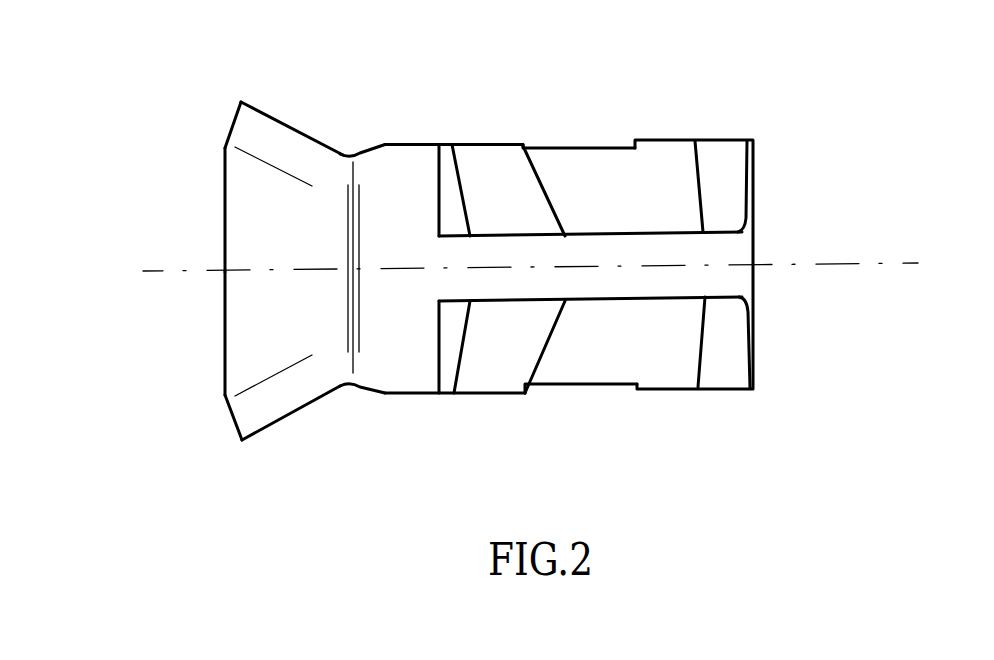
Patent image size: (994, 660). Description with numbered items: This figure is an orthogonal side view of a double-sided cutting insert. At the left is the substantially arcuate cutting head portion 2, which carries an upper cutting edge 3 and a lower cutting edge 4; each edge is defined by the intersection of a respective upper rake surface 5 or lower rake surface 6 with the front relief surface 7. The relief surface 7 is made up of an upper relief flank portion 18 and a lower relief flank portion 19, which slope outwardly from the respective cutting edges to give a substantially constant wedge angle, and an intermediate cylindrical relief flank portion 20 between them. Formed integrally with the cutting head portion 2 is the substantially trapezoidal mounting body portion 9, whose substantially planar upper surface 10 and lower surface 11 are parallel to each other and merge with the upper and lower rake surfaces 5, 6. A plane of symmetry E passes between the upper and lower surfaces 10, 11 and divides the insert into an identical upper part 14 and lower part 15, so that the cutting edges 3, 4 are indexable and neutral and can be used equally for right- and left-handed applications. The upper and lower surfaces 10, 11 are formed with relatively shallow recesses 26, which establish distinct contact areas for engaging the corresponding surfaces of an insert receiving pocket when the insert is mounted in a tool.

The cutting head portion 2 is at (148, 242).
The upper cutting edge 3 is at (242, 102).
The lower cutting edge 4 is at (243, 442).
The upper rake surface 5 is at (278, 118).
The lower rake surface 6 is at (290, 420).
The front relief surface 7 is at (217, 288).
The mounting body portion 9 is at (795, 117).
The upper surface 10 is at (477, 130).
The lower surface 11 is at (472, 398).
The upper part 14 is at (418, 122).
The lower part 15 is at (400, 420).
The upper relief flank portion 18 is at (228, 122).
The lower relief flank portion 19 is at (230, 405).
The intermediate cylindrical relief flank portion 20 is at (225, 328).
The recesses 26 is at (617, 155).
The plane of symmetry E is at (851, 262).